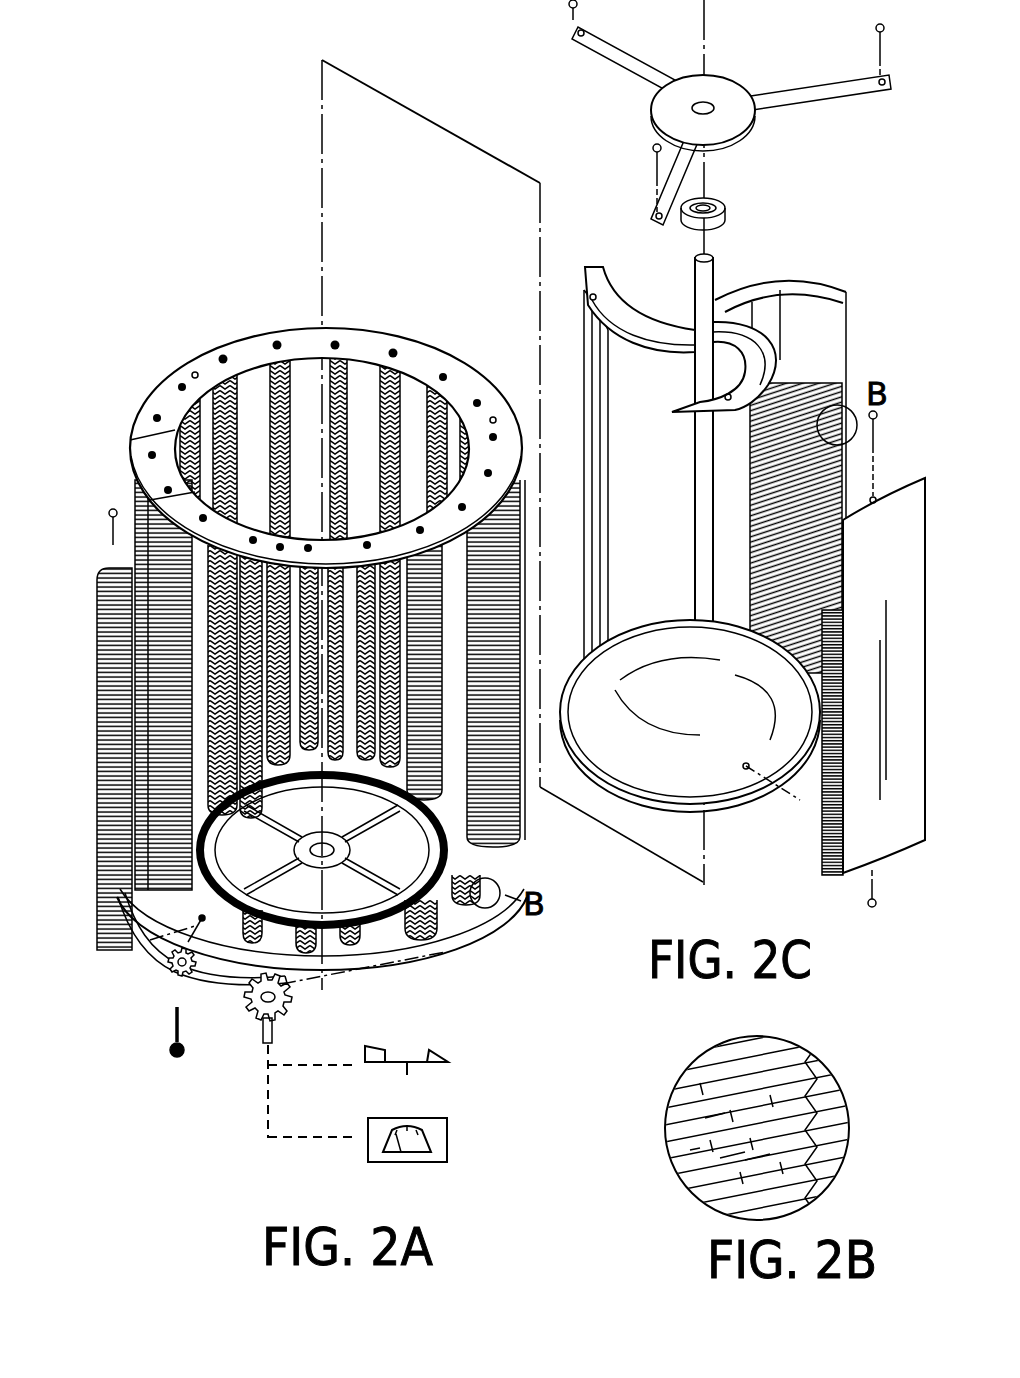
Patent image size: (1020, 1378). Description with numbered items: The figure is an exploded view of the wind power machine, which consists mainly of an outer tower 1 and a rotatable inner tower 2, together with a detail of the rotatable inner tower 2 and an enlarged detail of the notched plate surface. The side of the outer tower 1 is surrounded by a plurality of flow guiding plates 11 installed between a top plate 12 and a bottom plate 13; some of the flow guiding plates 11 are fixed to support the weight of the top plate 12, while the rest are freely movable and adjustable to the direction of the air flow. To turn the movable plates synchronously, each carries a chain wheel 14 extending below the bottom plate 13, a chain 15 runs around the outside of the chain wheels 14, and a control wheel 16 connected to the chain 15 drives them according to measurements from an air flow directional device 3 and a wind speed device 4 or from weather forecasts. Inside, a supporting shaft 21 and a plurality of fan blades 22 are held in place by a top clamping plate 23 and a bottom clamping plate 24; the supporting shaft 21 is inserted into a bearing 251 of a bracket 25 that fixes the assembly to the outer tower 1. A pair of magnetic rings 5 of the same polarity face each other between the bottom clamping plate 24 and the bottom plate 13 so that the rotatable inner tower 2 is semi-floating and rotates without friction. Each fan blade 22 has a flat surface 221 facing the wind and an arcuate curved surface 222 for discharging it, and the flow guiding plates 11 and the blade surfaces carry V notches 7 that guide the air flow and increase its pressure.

In FIG. 2A, the outer tower 1 is at (160, 180).
In FIG. 2C, the rotatable inner tower 2 is at (574, 180).
In FIG. 2A, the air flow directional device 3 is at (462, 1055).
In FIG. 2A, the wind speed device 4 is at (458, 1126).
In FIG. 2A, the magnetic rings 5 is at (375, 950).
In FIG. 2C, the magnetic rings 5 is at (738, 778).
In FIG. 2B, the V notch 7 is at (825, 1103).
In FIG. 2A, the flow guiding plates 11 is at (372, 357).
In FIG. 2A, the top plate 12 is at (421, 352).
In FIG. 2A, the bottom plate 13 is at (455, 920).
In FIG. 2A, the chain wheel 14 is at (172, 970).
In FIG. 2A, the chain 15 is at (217, 980).
In FIG. 2A, the control wheel 16 is at (248, 1033).
In FIG. 2C, the supporting shaft 21 is at (700, 484).
In FIG. 2C, the fan blades 22 is at (853, 315).
In FIG. 2C, the top clamping plate 23 is at (772, 282).
In FIG. 2C, the bottom clamping plate 24 is at (642, 774).
In FIG. 2C, the bracket 25 is at (708, 90).
In FIG. 2C, the flat surface 221 is at (892, 478).
In FIG. 2C, the curved surface 222 is at (885, 578).
In FIG. 2C, the bearing 251 is at (735, 212).